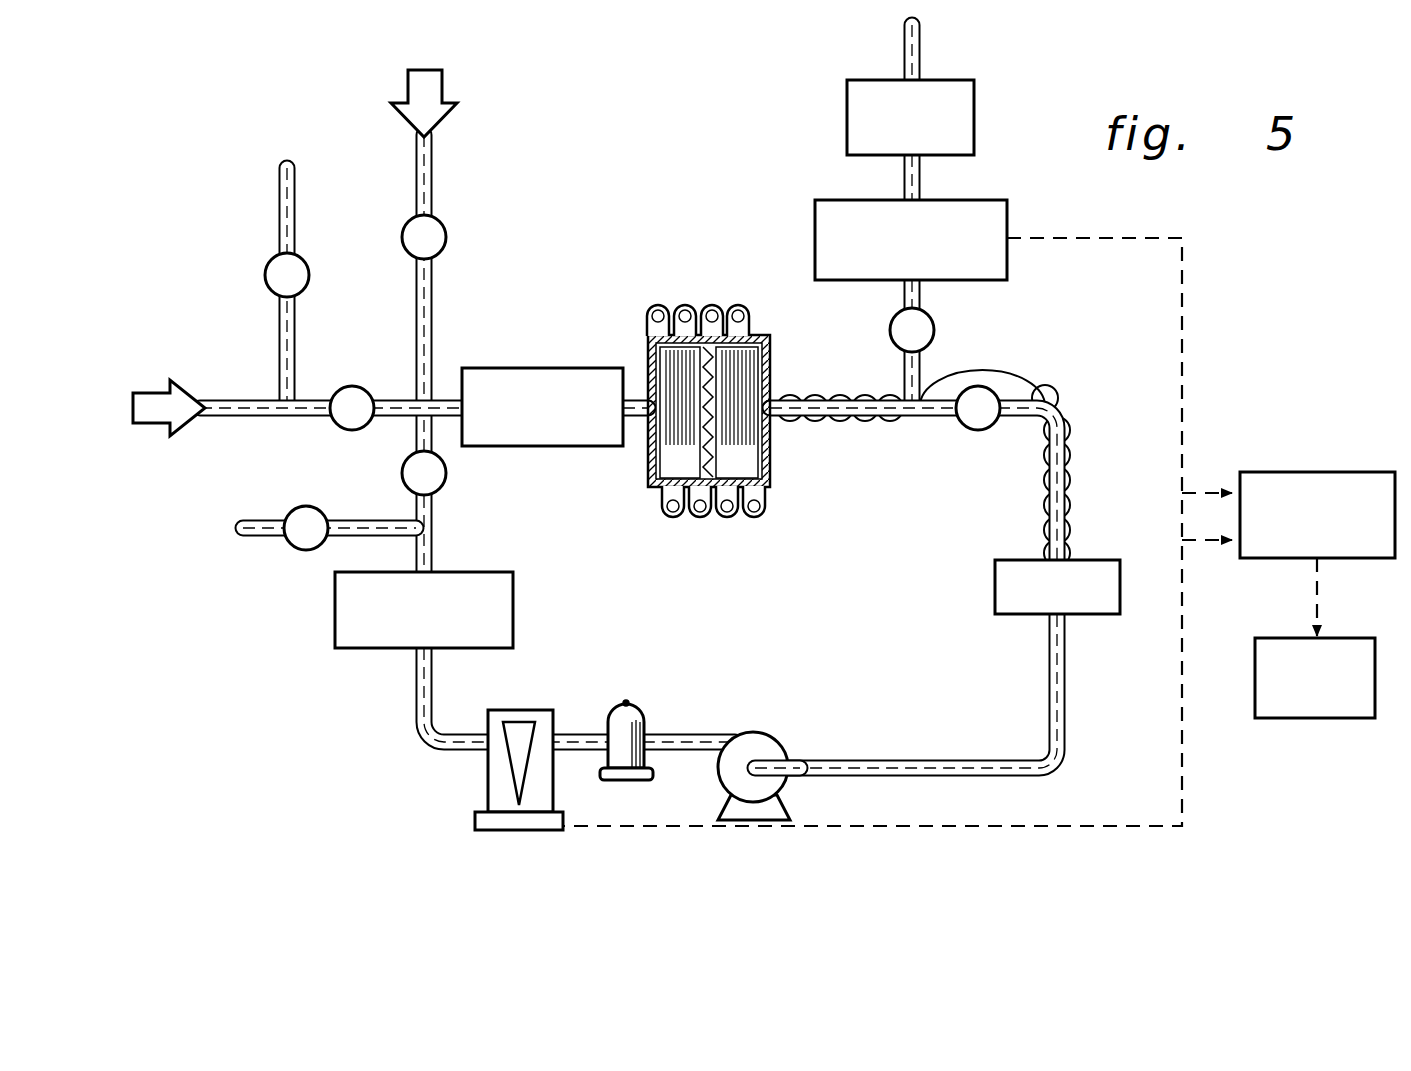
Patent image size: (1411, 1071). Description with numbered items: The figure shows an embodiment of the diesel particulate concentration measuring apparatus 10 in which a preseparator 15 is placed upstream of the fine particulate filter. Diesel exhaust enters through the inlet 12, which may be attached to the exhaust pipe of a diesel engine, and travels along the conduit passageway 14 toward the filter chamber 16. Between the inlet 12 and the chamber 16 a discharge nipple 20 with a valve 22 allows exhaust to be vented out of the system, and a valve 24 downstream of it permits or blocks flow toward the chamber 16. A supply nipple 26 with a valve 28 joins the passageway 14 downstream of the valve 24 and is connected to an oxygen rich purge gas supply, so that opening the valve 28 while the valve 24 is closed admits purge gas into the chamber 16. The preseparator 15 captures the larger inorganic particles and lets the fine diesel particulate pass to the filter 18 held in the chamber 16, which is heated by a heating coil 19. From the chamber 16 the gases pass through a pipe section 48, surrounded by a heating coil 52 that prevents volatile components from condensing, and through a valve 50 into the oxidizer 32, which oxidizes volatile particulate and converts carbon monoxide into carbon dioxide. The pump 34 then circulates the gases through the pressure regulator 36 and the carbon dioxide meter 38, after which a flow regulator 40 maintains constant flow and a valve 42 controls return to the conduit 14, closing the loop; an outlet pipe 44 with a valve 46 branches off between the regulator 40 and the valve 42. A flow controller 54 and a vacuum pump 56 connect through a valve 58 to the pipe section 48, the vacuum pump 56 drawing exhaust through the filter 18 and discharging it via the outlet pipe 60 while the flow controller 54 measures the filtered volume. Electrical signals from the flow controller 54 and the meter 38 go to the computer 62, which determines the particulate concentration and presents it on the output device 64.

The apparatus 10 is at (190, 758).
The inlet 12 is at (249, 394).
The conduit passageway 14 is at (440, 402).
The preseparator 15 is at (552, 368).
The chamber 16 is at (769, 460).
The filter 18 is at (728, 380).
The heating coil 19 is at (708, 305).
The discharge nipple 20 is at (278, 224).
The valve 22 is at (265, 278).
The valve 24 is at (347, 388).
The supply nipple 26 is at (440, 160).
The valve 28 is at (405, 225).
The oxidizer 32 is at (995, 600).
The pump 34 is at (780, 750).
The pressure regulator 36 is at (645, 720).
The carbon dioxide meter 38 is at (535, 710).
The flow regulator 40 is at (361, 650).
The valve 42 is at (402, 473).
The outlet pipe 44 is at (252, 533).
The valve 46 is at (306, 552).
The pipe section 48 is at (1048, 525).
The valve 50 is at (975, 432).
The heating coil 52 is at (1047, 402).
The flow controller 54 is at (815, 238).
The vacuum pump 56 is at (847, 122).
The valve 58 is at (935, 330).
The outlet pipe 60 is at (921, 52).
The computer 62 is at (1340, 472).
The output device 64 is at (1295, 718).